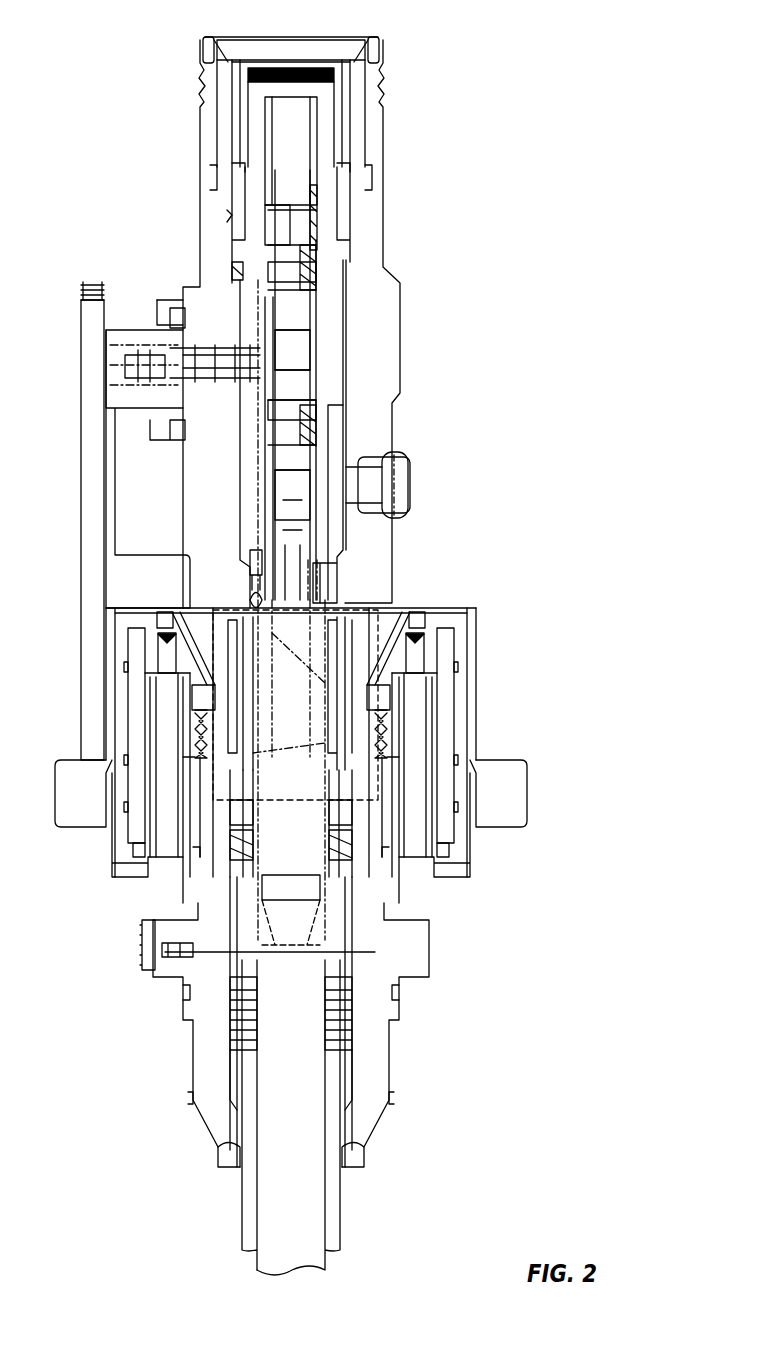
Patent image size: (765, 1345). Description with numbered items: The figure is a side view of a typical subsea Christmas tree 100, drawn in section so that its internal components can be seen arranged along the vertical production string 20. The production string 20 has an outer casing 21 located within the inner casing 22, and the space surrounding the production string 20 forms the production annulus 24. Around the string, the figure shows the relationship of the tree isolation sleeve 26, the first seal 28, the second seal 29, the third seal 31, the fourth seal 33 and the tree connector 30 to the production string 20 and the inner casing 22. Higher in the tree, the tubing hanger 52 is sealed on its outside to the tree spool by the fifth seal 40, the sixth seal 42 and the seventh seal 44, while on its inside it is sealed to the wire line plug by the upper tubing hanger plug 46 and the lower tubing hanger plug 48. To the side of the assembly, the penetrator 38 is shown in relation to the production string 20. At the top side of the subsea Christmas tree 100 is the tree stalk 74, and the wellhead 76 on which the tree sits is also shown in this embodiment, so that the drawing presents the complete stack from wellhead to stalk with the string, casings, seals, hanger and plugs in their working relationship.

The subsea Christmas tree 100 is at (114, 48).
The tree stalk 74 is at (212, 135).
The seventh seal 44 is at (350, 283).
The fifth seal 40 is at (350, 325).
The upper tubing hanger plug 46 is at (273, 280).
The lower tubing hanger plug 48 is at (290, 425).
The tubing hanger 52 is at (350, 403).
The sixth seal 42 is at (350, 453).
The penetrator 38 is at (158, 330).
The third seal 31 is at (350, 632).
The first seal 28 is at (393, 673).
The tree connector 30 is at (467, 705).
The wellhead 76 is at (205, 820).
The tree isolation sleeve 26 is at (350, 805).
The fourth seal 33 is at (355, 845).
The second seal 29 is at (320, 895).
The production string 20 is at (267, 930).
The production annulus 24 is at (397, 1003).
The outer casing 21 is at (238, 1210).
The inner casing 22 is at (343, 1215).